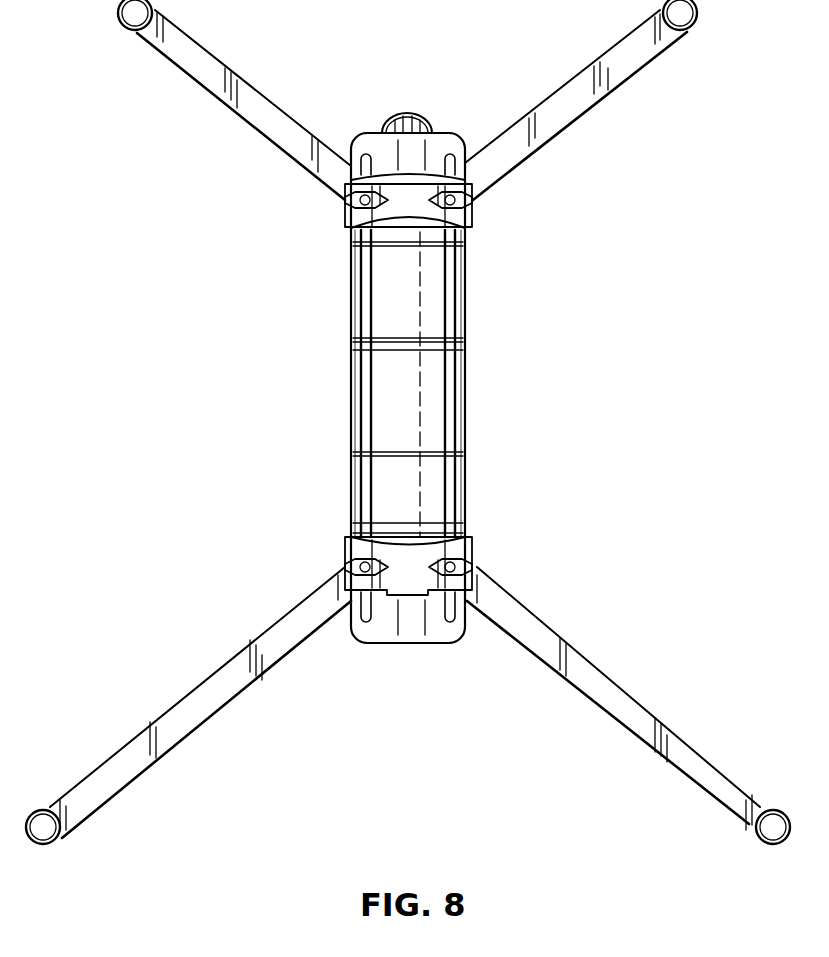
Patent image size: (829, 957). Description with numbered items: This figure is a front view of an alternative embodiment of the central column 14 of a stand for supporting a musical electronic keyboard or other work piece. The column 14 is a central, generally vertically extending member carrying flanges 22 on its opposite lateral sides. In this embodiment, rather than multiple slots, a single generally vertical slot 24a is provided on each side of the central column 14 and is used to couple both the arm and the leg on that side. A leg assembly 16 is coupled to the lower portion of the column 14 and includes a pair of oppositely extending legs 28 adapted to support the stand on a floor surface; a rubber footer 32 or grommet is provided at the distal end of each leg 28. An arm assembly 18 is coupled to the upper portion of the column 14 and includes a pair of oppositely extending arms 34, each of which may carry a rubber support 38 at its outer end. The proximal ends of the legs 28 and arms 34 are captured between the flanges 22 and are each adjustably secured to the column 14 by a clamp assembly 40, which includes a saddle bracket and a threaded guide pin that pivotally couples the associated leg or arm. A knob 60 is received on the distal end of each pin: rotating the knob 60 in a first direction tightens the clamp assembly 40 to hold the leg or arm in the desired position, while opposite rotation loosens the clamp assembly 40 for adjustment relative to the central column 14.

The column 14 is at (467, 332).
The leg assembly 16 is at (408, 717).
The arm assembly 18 is at (404, 100).
The flanges 22 is at (422, 417).
The slot 24a is at (366, 388).
The legs 28 is at (237, 653).
The rubber footer 32 is at (50, 832).
The arms 34 is at (258, 131).
The rubber support 38 is at (128, 20).
The clamp assembly 40 is at (429, 180).
The knob 60 is at (345, 200).